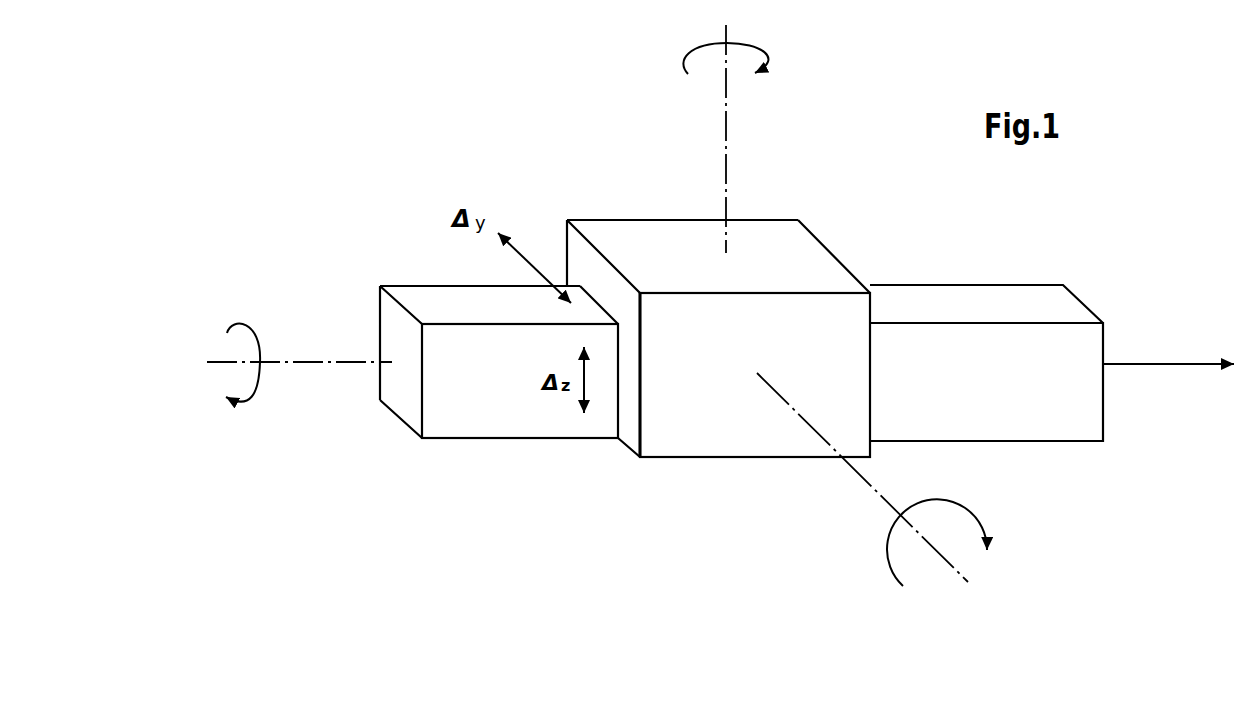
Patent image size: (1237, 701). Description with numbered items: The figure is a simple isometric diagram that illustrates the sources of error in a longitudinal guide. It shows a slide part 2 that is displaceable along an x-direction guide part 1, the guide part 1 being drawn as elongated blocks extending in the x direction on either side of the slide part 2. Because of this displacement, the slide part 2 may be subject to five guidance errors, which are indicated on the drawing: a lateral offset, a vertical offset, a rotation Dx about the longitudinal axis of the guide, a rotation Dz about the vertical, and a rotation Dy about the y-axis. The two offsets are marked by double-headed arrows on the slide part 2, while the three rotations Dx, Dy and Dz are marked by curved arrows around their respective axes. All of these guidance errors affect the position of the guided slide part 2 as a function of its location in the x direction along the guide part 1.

The guide part 1 is at (470, 438).
The slide part 2 is at (815, 263).
The x-direction x is at (1168, 348).
The rotation about the longitudinal axis of the guide Dx is at (288, 359).
The rotation about the y-axis Dy is at (872, 479).
The rotation about the vertical Dz is at (700, 139).